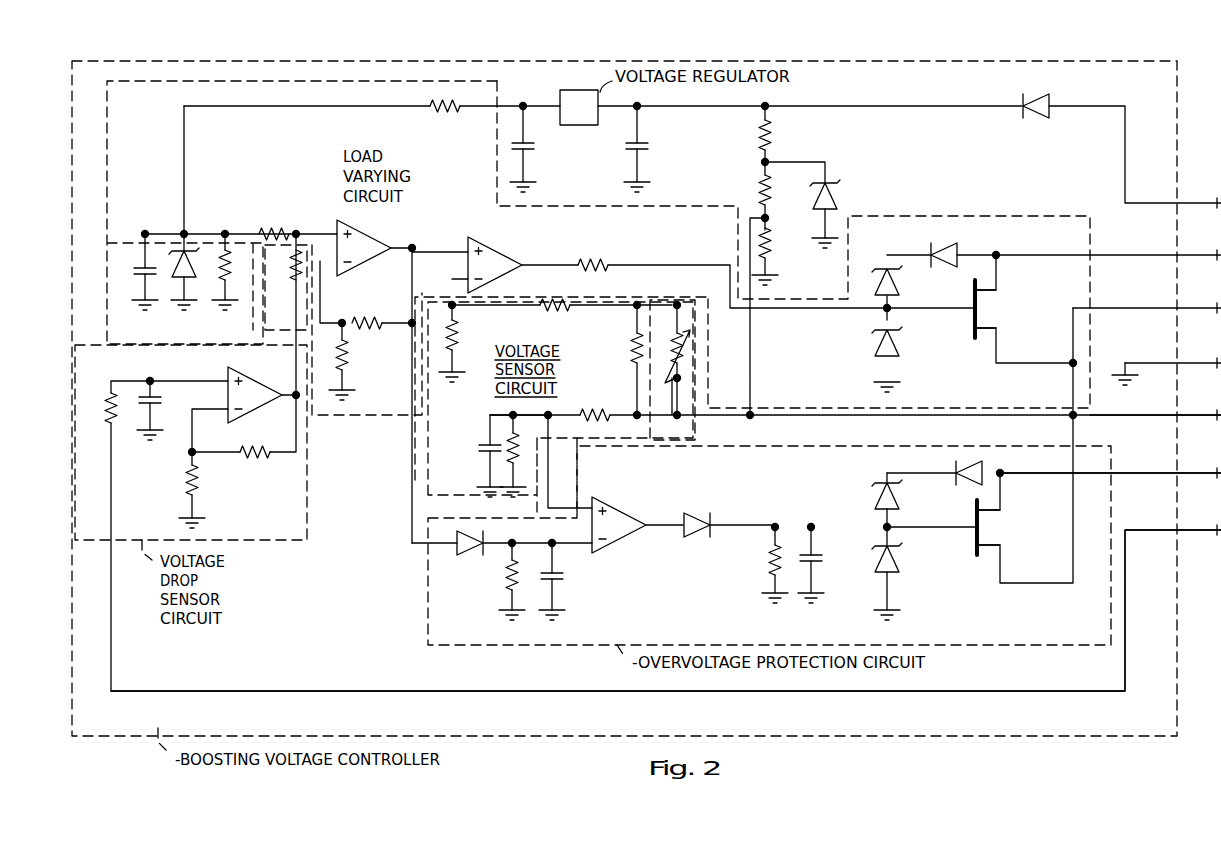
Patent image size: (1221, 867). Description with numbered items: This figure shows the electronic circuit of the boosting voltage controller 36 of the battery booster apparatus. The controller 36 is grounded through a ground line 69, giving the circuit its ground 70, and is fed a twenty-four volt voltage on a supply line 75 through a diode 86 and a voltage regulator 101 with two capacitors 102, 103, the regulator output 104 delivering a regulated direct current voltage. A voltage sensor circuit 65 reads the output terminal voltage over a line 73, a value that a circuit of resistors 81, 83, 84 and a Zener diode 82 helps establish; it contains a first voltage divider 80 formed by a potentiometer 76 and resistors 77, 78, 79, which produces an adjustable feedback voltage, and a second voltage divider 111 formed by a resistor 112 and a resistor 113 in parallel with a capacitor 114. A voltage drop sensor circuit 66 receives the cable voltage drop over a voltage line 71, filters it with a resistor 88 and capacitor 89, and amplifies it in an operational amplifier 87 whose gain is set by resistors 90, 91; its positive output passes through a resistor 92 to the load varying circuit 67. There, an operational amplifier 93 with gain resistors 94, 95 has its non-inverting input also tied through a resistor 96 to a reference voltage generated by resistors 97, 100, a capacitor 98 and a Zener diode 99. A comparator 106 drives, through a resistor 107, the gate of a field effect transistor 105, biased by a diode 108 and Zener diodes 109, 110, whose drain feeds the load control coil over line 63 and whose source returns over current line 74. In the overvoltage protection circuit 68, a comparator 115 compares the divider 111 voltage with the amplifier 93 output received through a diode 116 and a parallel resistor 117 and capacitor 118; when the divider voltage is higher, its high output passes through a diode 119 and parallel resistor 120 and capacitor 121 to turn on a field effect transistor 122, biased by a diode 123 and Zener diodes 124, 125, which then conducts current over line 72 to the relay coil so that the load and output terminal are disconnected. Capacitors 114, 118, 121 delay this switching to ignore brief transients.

The electronic boosting voltage controller 36 is at (108, 726).
The line 63 is at (1144, 253).
The first sensor circuit 65 is at (413, 483).
The second sensor circuit 66 is at (305, 528).
The load varying circuit 67 is at (109, 100).
The overvoltage protection circuit 68 is at (1082, 658).
The ground line 69 is at (1144, 359).
The ground 70 is at (240, 316).
The voltage line 71 is at (1156, 528).
The line 72 is at (1162, 456).
The line 73 is at (1158, 417).
The current line 74 is at (1144, 304).
The supply line 75 is at (1146, 201).
The potentiometer 76 is at (670, 370).
The resistor 77 is at (630, 352).
The resistor 78 is at (557, 312).
The resistor 79 is at (457, 330).
The first voltage divider 80 is at (516, 337).
The resistor 81 is at (770, 130).
The Zener diode 82 is at (832, 188).
The resistor 83 is at (760, 190).
The resistor 84 is at (770, 242).
The diode 86 is at (1036, 118).
The operational amplifier 87 is at (252, 382).
The resistor 88 is at (106, 402).
The capacitor 89 is at (163, 400).
The resistor 90 is at (197, 485).
The resistor 91 is at (260, 446).
The resistor 92 is at (292, 285).
The operational amplifier 93 is at (372, 244).
The resistor 94 is at (366, 316).
The resistor 95 is at (347, 352).
The resistor 96 is at (274, 226).
The resistor 97 is at (222, 246).
The capacitor 98 is at (134, 270).
The Zener diode 99 is at (170, 242).
The resistor 100 is at (447, 113).
The voltage regulator 101 is at (559, 92).
The capacitor 102 is at (536, 147).
The capacitor 103 is at (650, 147).
The output 104 is at (522, 100).
The field effect transistor 105 is at (980, 312).
The comparator 106 is at (492, 251).
The resistor 107 is at (597, 258).
The diode 108 is at (944, 246).
The Zener diode 109 is at (898, 285).
The Zener diode 110 is at (896, 347).
The second voltage divider 111 is at (482, 424).
The resistor 112 is at (596, 408).
The resistor 113 is at (519, 455).
The capacitor 114 is at (480, 450).
The comparator 115 is at (612, 516).
The diode 116 is at (470, 556).
The resistor 117 is at (506, 582).
The capacitor 118 is at (564, 575).
The diode 119 is at (698, 512).
The resistor 120 is at (767, 562).
The capacitor 121 is at (822, 560).
The field effect transistor 122 is at (982, 528).
The diode 123 is at (984, 468).
The Zener diode 124 is at (872, 498).
The Zener diode 125 is at (896, 566).